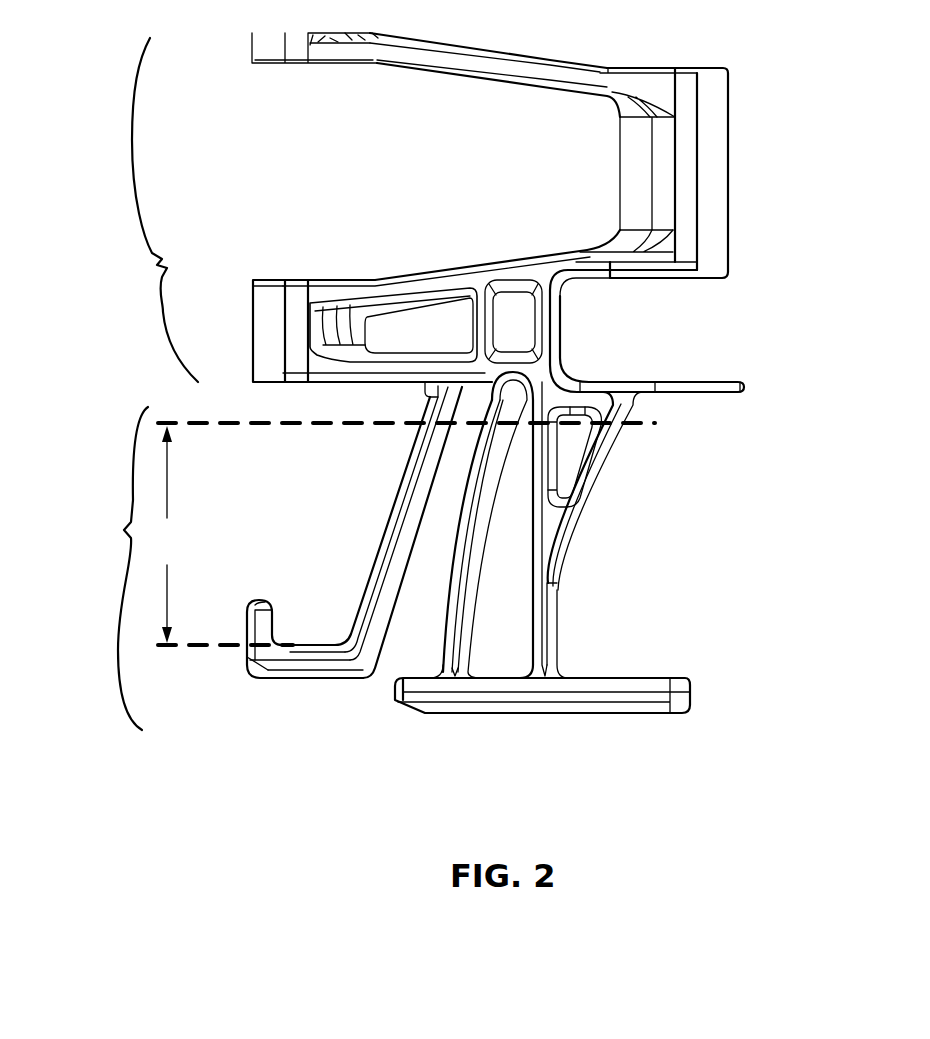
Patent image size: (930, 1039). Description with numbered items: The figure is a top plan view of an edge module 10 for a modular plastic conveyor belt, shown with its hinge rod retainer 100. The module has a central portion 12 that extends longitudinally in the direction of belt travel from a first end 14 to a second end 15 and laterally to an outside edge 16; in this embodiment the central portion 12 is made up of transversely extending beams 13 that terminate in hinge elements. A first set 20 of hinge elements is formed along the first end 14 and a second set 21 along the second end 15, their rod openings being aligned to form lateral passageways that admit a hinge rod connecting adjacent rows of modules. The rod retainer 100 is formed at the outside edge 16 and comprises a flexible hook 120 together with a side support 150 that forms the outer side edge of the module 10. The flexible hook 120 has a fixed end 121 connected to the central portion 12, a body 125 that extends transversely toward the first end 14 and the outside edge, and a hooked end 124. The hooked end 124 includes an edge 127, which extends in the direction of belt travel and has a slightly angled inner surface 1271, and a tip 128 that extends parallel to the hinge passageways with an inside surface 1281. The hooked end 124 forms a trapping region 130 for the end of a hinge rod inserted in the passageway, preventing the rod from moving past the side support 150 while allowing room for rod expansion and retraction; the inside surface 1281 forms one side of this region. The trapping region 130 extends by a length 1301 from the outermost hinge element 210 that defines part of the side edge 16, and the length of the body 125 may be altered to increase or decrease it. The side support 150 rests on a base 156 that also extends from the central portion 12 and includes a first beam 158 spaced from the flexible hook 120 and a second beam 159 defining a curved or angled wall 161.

The edge module 10 is at (818, 282).
The central portion 12 is at (147, 210).
The transversely extending beams 13 is at (472, 44).
The first end 14 is at (218, 150).
The second end 15 is at (747, 149).
The outside edge 16 is at (279, 386).
The first set of hinge elements 20 is at (372, 331).
The second set of hinge elements 21 is at (664, 94).
The outermost hinge element 210 is at (740, 385).
The rod retainer 100 is at (104, 568).
The flexible hook 120 is at (357, 548).
The fixed end 121 is at (425, 387).
The hooked end 124 is at (237, 673).
The body 125 is at (393, 511).
The edge 127 is at (340, 663).
The inner surface 1271 is at (310, 660).
The tip 128 is at (263, 622).
The inside surface 1281 is at (272, 630).
The trapping region 130 is at (332, 583).
The length of trapping region 1301 is at (225, 535).
The side support 150 is at (592, 698).
The base 156 is at (502, 580).
The first beam 158 is at (455, 582).
The second beam 159 is at (552, 569).
The curved or angled wall 161 is at (595, 498).